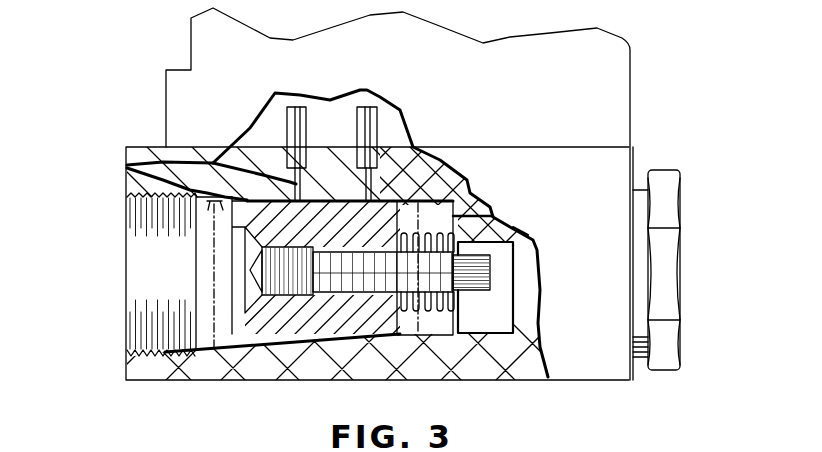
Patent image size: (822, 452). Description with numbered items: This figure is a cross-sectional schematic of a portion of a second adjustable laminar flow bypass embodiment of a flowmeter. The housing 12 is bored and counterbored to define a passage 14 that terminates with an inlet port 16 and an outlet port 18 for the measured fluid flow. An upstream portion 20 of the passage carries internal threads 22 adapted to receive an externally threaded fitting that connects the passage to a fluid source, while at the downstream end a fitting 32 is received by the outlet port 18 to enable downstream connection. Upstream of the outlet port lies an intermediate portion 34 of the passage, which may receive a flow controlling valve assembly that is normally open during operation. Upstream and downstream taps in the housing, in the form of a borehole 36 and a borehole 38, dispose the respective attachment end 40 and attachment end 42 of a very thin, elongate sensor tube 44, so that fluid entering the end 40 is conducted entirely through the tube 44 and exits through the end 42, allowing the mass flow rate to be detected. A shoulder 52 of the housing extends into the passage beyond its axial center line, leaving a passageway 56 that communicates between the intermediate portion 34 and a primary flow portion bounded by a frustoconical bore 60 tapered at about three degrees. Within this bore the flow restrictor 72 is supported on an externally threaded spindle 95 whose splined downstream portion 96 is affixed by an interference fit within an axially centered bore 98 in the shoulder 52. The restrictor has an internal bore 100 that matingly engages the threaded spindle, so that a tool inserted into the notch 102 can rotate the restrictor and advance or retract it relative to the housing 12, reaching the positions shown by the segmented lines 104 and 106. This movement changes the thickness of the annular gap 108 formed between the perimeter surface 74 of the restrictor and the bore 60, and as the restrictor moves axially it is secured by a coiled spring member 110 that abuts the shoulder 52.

The housing 12 is at (552, 372).
The passage 14 is at (152, 384).
The inlet port 16 is at (120, 263).
The outlet port 18 is at (690, 227).
The upstream portion 20 is at (150, 242).
The internal threads 22 is at (150, 345).
The fitting 32 is at (690, 150).
The intermediate portion 34 is at (526, 274).
The borehole 36 is at (215, 162).
The borehole 38 is at (378, 175).
The attachment end 40 is at (287, 123).
The attachment end 42 is at (380, 108).
The sensor tube 44 is at (363, 93).
The shoulder 52 is at (500, 307).
The passageway 56 is at (475, 223).
The frustoconical bore 60 is at (457, 190).
The flow restrictor 72 is at (198, 374).
The perimeter surface 74 is at (318, 300).
The externally threaded spindle 95 is at (294, 300).
The splined downstream portion 96 is at (470, 285).
The axially centered bore 98 is at (478, 322).
The internal bore 100 is at (232, 377).
The notch 102 is at (240, 278).
The segmented lines 104 is at (416, 347).
The segmented lines 106 is at (147, 173).
The annular gap 108 is at (443, 197).
The coiled spring member 110 is at (421, 340).